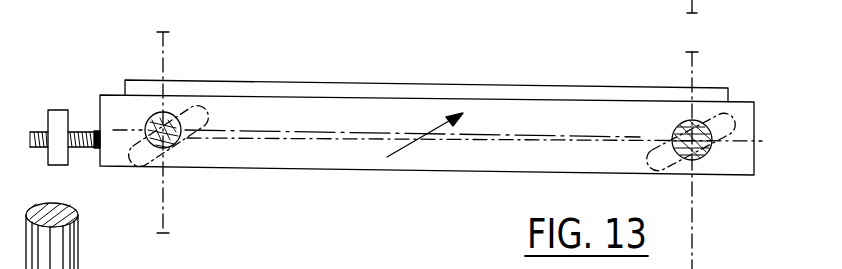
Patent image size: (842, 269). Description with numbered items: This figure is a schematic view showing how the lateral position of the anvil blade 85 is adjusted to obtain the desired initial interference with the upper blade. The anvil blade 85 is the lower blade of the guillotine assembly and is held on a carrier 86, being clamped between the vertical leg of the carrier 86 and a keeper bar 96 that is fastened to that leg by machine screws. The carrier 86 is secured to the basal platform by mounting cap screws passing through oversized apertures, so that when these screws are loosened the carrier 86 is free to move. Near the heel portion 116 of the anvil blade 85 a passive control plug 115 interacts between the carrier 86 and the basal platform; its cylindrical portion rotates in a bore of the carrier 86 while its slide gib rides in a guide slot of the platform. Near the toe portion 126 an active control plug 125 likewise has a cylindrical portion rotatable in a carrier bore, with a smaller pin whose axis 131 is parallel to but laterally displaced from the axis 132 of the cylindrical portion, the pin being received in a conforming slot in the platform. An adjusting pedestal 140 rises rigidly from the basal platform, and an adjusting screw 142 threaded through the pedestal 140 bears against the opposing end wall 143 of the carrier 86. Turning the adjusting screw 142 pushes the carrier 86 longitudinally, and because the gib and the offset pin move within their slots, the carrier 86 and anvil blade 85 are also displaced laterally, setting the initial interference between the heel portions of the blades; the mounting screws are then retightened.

The anvil blade 85 is at (377, 83).
The carrier 86 is at (427, 170).
The keeper bar 96 is at (316, 161).
The passive control plug 115 is at (673, 130).
The heel portion 116 is at (721, 88).
The active control plug 125 is at (182, 118).
The toe portion 126 is at (148, 80).
The axis of pin 131 is at (186, 143).
The axis of cylindrical portion 132 is at (168, 125).
The adjusting pedestal 140 is at (58, 113).
The adjusting screw 142 is at (78, 150).
The end wall 143 is at (99, 115).